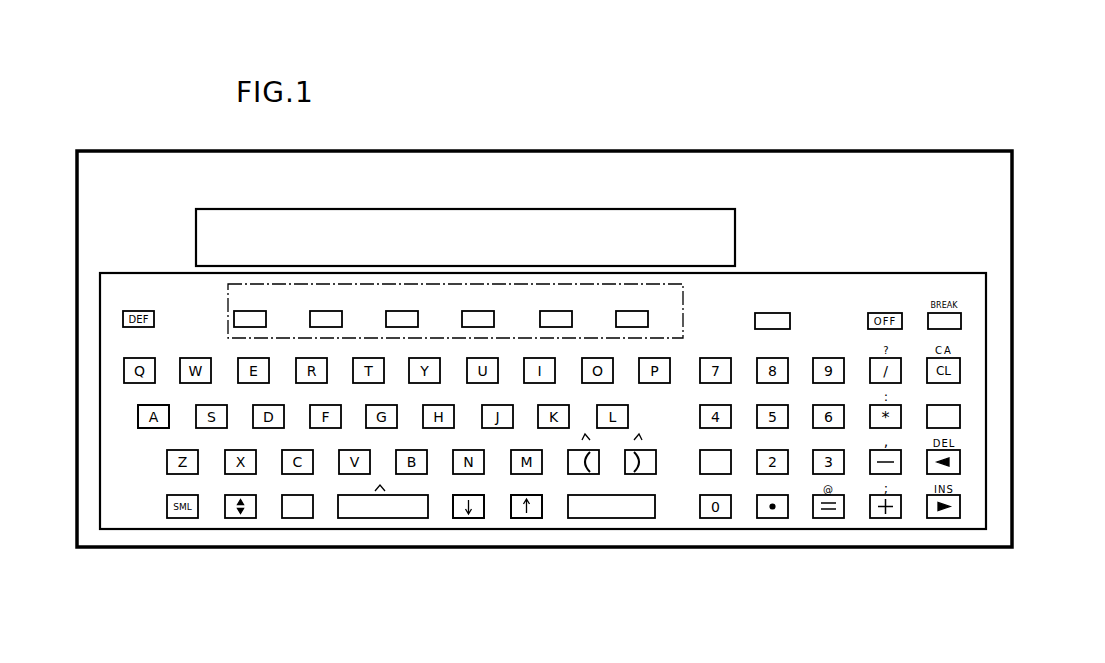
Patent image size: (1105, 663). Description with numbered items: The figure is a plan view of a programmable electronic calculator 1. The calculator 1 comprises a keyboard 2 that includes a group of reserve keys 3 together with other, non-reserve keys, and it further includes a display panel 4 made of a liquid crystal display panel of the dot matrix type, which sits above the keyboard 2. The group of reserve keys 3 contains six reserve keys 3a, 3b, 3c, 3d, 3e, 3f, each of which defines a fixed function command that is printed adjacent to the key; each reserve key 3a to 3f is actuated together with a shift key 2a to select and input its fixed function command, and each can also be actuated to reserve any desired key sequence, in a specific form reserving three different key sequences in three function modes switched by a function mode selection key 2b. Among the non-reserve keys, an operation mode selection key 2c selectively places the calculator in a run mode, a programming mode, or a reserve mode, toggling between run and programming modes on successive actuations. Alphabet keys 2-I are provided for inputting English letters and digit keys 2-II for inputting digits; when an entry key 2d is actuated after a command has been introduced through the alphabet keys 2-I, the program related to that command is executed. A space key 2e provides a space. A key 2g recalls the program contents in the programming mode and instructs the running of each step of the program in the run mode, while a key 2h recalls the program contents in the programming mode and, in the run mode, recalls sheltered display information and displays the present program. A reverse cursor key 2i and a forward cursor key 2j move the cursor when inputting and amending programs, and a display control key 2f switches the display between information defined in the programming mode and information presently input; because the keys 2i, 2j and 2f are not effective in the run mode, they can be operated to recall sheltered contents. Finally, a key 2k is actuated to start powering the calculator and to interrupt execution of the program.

The programmable electronic calculator 1 is at (833, 152).
The keyboard 2 is at (848, 274).
The shift key 2a is at (786, 316).
The function mode selection key 2b is at (245, 496).
The operation mode selection key 2c is at (940, 408).
The entry key 2d is at (640, 494).
The space key 2e is at (405, 494).
The display control key 2f is at (308, 496).
The key 2g is at (476, 518).
The key 2h is at (541, 518).
The reverse cursor key 2i is at (961, 464).
The forward cursor key 2j is at (961, 510).
The key 2k is at (961, 326).
The alphabet keys 2-I is at (141, 424).
The digit keys 2-II is at (734, 463).
The group of reserve keys 3 is at (688, 298).
The reserve key 3a is at (255, 312).
The reserve key 3b is at (331, 312).
The reserve key 3c is at (407, 312).
The reserve key 3d is at (483, 312).
The reserve key 3e is at (561, 312).
The reserve key 3f is at (637, 312).
The display panel 4 is at (722, 209).